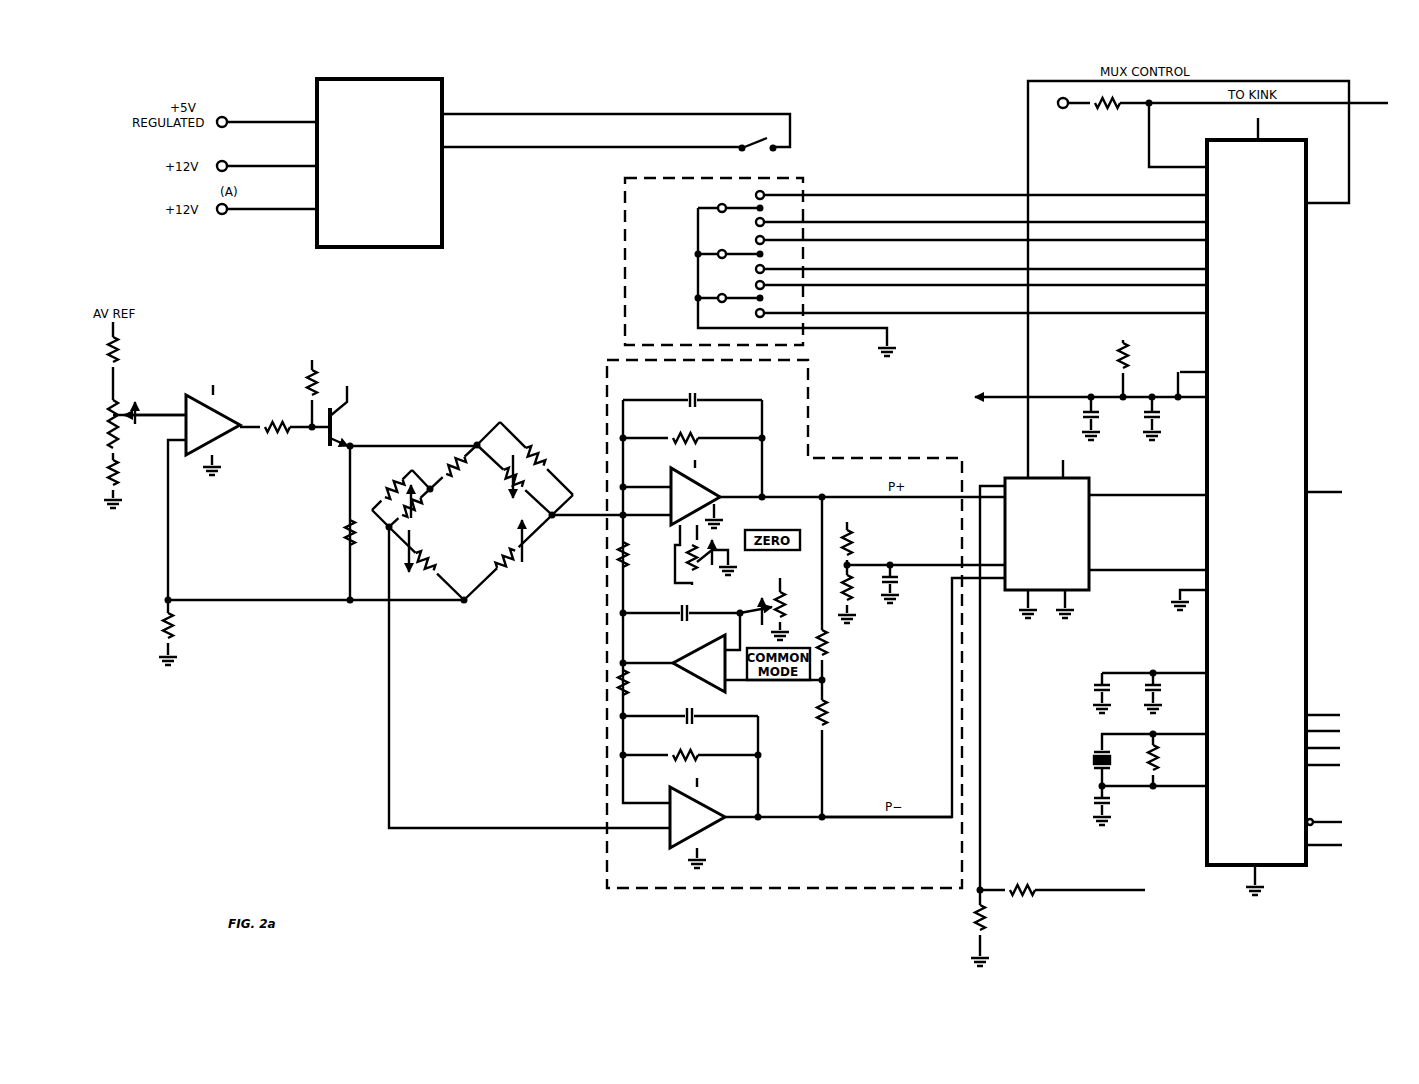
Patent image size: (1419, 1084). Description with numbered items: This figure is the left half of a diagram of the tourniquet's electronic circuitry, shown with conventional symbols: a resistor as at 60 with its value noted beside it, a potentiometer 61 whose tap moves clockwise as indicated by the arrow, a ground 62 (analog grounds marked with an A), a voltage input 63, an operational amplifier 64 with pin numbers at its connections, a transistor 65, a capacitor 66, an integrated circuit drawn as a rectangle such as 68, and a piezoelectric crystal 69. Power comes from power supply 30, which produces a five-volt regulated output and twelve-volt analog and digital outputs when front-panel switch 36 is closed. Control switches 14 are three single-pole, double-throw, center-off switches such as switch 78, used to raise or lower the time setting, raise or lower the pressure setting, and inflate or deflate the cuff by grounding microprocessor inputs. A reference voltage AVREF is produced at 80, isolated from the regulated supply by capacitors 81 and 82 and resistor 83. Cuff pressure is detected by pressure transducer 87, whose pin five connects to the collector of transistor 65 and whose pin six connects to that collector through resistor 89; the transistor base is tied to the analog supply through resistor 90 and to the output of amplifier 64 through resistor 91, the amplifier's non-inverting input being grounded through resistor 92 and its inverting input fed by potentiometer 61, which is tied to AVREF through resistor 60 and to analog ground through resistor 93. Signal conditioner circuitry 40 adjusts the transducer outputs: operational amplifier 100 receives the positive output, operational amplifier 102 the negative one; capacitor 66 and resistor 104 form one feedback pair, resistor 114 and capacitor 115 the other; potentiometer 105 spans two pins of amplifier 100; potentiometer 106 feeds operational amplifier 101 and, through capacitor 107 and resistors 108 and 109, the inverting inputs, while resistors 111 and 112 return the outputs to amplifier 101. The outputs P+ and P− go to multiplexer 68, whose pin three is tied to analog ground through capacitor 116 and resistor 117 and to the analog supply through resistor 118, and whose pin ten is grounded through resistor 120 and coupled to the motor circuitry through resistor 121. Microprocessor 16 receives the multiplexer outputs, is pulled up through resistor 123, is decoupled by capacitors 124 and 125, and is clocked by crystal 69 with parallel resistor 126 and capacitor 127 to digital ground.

The power supply 30 is at (410, 248).
The switch 36 is at (748, 142).
The control switches 14 is at (729, 267).
The single-pole, double-throw, center-off switch 78 is at (752, 206).
The resistor 60 is at (120, 357).
The potentiometer 61 is at (118, 430).
The ground 62 is at (106, 505).
The voltage input 63 is at (216, 392).
The operational amplifier 64 is at (208, 462).
The transistor 65 is at (344, 447).
The pressure transducer 87 is at (488, 405).
The resistor 89 is at (343, 537).
The resistor 90 is at (325, 378).
The resistor 91 is at (290, 436).
The resistor 92 is at (162, 636).
The resistor 93 is at (118, 478).
The capacitor 66 is at (704, 398).
The resistor 104 is at (698, 435).
The operational amplifier 100 is at (671, 470).
The potentiometer 105 is at (690, 562).
The resistor 108 is at (618, 562).
The potentiometer 106 is at (758, 610).
The capacitor 107 is at (678, 618).
The operational amplifier 101 is at (728, 685).
The resistor 109 is at (618, 690).
The capacitor 115 is at (698, 722).
The resistor 114 is at (672, 760).
The operational amplifier 102 is at (722, 826).
The resistor 111 is at (826, 655).
The resistor 112 is at (826, 725).
The signal conditioner circuitry 40 is at (605, 740).
The resistor 118 is at (856, 562).
The resistor 117 is at (852, 610).
The capacitor 116 is at (897, 572).
The AVREF output 80 is at (985, 396).
The capacitor 81 is at (1098, 424).
The capacitor 82 is at (1158, 424).
The resistor 83 is at (1116, 356).
The multiplexer 68 is at (1089, 520).
The microprocessor 16 is at (1306, 285).
The resistor 123 is at (1096, 112).
The capacitor 125 is at (1100, 682).
The capacitor 124 is at (1150, 680).
The piezoelectric crystal 69 is at (1098, 750).
The resistor 126 is at (1156, 770).
The capacitor 127 is at (1095, 814).
The resistor 121 is at (1018, 888).
The resistor 120 is at (974, 925).